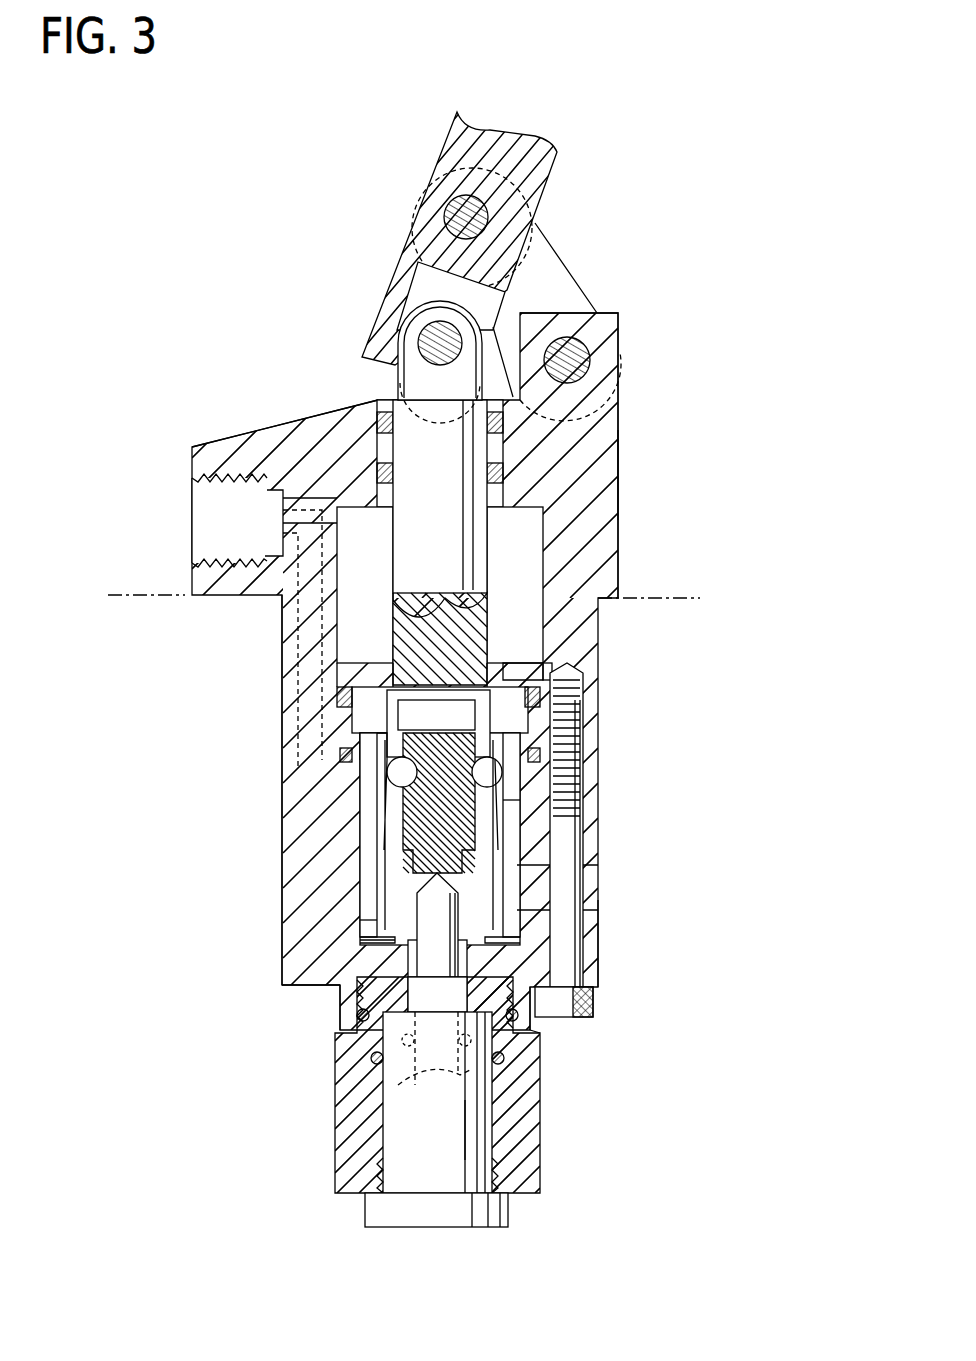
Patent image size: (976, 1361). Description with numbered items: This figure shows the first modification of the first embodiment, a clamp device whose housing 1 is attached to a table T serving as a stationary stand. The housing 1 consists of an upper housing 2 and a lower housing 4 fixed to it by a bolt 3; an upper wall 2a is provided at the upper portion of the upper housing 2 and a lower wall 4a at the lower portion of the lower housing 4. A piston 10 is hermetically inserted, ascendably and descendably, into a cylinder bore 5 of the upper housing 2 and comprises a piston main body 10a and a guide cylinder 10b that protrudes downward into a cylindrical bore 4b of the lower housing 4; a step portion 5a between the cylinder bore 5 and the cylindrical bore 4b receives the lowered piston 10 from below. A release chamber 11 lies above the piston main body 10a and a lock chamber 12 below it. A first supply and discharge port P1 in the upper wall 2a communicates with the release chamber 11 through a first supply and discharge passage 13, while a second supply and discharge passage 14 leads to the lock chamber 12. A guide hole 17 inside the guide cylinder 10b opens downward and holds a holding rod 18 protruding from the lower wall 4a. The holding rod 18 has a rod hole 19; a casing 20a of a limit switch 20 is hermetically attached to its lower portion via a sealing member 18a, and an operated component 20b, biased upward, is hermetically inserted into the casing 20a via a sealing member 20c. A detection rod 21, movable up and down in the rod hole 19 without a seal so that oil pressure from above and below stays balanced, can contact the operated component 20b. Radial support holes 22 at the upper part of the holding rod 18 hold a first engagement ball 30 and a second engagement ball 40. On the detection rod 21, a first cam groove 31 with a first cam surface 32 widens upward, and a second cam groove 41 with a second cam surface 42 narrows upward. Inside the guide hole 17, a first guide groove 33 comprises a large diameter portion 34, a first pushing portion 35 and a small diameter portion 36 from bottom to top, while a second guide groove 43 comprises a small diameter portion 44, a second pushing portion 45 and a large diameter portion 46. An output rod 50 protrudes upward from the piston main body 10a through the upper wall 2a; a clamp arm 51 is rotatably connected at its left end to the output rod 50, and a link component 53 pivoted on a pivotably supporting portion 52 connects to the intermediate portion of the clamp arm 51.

The housing 1 is at (293, 420).
The upper housing 2 is at (620, 447).
The upper wall 2a is at (605, 485).
The bolt 3 is at (560, 1005).
The lower housing 4 is at (535, 1030).
The lower wall 4a is at (307, 980).
The cylindrical bore 4b is at (520, 930).
The cylinder bore 5 is at (527, 575).
The step portion 5a is at (355, 745).
The piston 10 is at (283, 626).
The piston main body 10a is at (547, 670).
The guide cylinder 10b is at (520, 960).
The release chamber 11 is at (518, 523).
The lock chamber 12 is at (333, 675).
The first supply and discharge passage 13 is at (290, 467).
The second supply and discharge passage 14 is at (297, 572).
The first supply and discharge port P1 is at (218, 523).
The guide hole 17 is at (397, 687).
The holding rod 18 is at (280, 985).
The sealing member 18a is at (370, 1062).
The rod hole 19 is at (547, 680).
The limit switch 20 is at (497, 1150).
The casing 20a is at (463, 1148).
The operated component 20b is at (583, 1000).
The sealing member 20c is at (428, 1078).
The detection rod 21 is at (370, 850).
The support holes 22 is at (395, 763).
The first engagement ball 30 is at (420, 805).
The first cam groove 31 is at (395, 772).
The first cam surface 32 is at (470, 772).
The first guide groove 33 is at (385, 920).
The large diameter portion 34 is at (395, 940).
The first pushing portion 35 is at (385, 880).
The small diameter portion 36 is at (340, 700).
The second engagement ball 40 is at (567, 807).
The second cam groove 41 is at (567, 707).
The second cam surface 42 is at (573, 733).
The second guide groove 43 is at (520, 865).
The small diameter portion 44 is at (520, 908).
The second pushing portion 45 is at (520, 800).
The large diameter portion 46 is at (548, 768).
The output rod 50 is at (415, 550).
The clamp arm 51 is at (455, 152).
The pivotably supporting portion 52 is at (600, 314).
The link component 53 is at (548, 256).
The table T is at (650, 598).